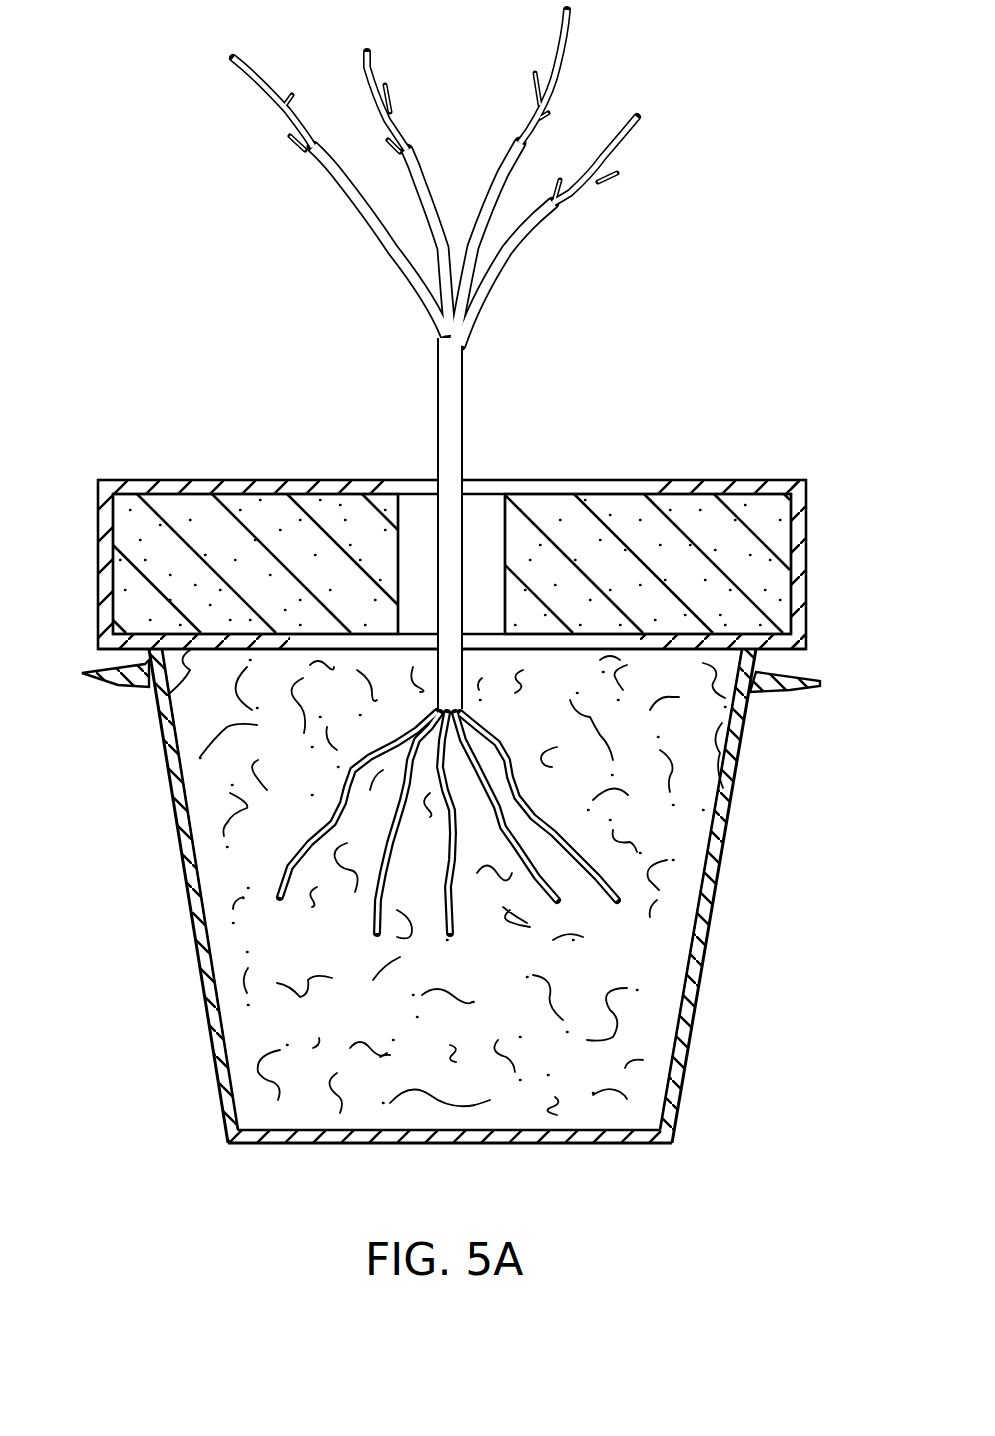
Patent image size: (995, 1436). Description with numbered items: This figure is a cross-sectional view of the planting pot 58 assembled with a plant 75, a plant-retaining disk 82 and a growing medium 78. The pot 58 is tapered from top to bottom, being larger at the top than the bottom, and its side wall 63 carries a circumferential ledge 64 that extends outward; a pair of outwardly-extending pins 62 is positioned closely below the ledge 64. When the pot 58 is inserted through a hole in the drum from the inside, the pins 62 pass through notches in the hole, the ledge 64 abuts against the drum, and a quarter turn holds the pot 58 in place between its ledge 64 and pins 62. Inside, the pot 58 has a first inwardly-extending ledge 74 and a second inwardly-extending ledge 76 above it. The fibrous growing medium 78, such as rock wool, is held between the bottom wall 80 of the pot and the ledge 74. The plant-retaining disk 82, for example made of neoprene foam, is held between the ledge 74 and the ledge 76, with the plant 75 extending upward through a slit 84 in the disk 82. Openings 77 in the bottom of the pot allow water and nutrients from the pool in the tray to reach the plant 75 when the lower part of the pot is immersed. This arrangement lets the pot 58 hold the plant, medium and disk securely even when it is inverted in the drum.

The pot 58 is at (140, 906).
The pins 62 is at (128, 685).
The side wall 63 is at (706, 932).
The circumferential ledge 64 is at (807, 657).
The first inwardly-extending ledge 74 is at (228, 650).
The plant 75 is at (456, 379).
The second inwardly-extending ledge 76 is at (196, 488).
The openings 77 is at (334, 1134).
The fibrous growing medium 78 is at (275, 1031).
The bottom wall 80 is at (612, 1139).
The plant-retaining disk 82 is at (760, 576).
The slit 84 is at (493, 486).